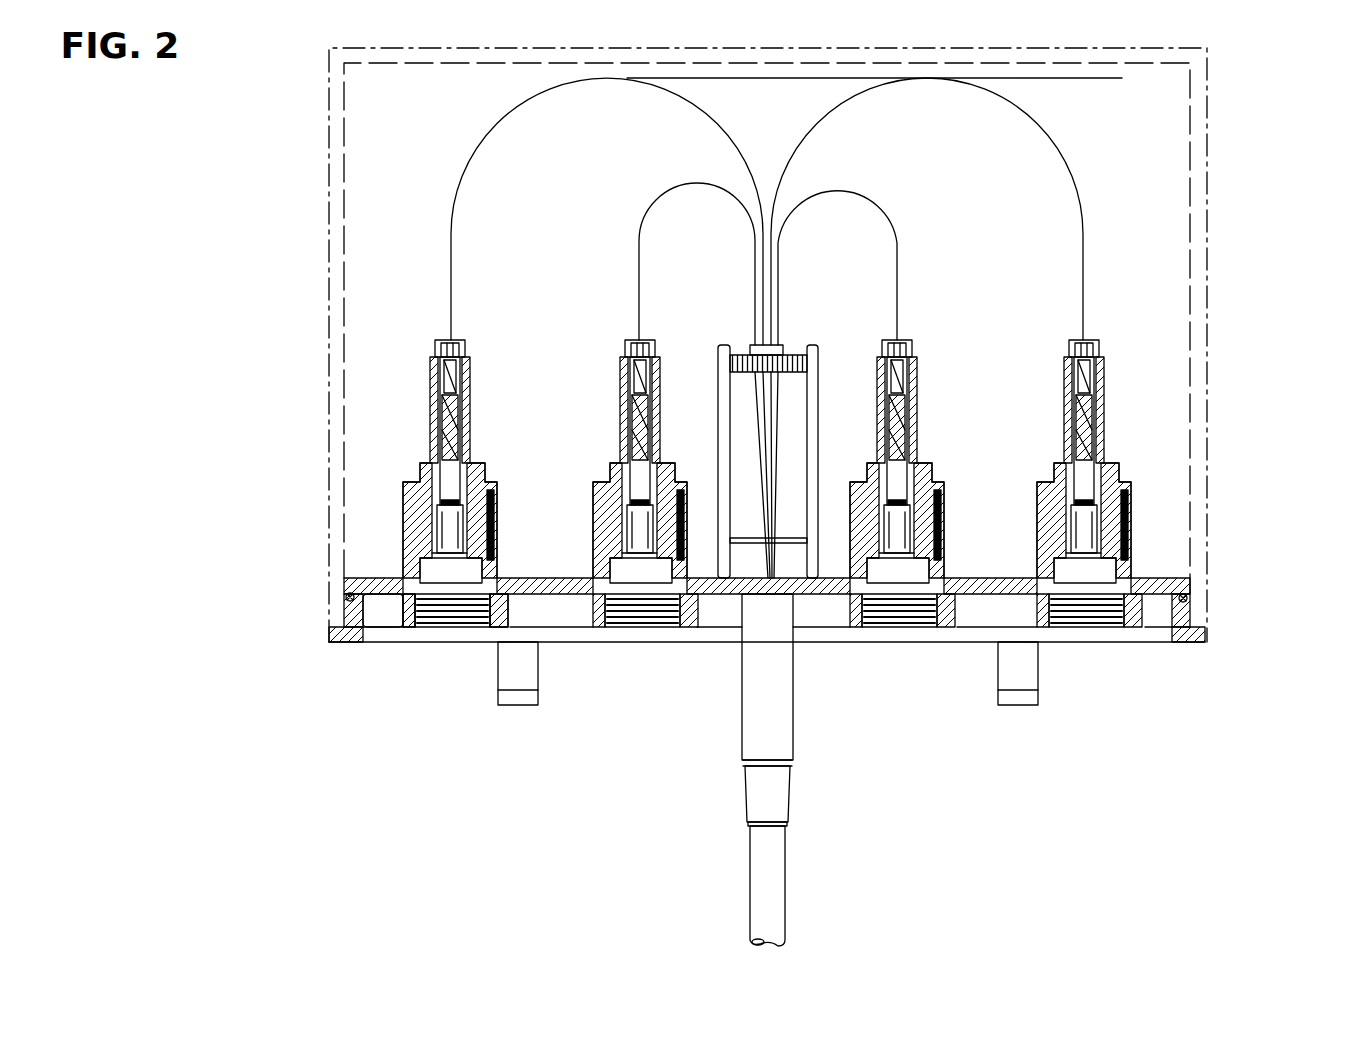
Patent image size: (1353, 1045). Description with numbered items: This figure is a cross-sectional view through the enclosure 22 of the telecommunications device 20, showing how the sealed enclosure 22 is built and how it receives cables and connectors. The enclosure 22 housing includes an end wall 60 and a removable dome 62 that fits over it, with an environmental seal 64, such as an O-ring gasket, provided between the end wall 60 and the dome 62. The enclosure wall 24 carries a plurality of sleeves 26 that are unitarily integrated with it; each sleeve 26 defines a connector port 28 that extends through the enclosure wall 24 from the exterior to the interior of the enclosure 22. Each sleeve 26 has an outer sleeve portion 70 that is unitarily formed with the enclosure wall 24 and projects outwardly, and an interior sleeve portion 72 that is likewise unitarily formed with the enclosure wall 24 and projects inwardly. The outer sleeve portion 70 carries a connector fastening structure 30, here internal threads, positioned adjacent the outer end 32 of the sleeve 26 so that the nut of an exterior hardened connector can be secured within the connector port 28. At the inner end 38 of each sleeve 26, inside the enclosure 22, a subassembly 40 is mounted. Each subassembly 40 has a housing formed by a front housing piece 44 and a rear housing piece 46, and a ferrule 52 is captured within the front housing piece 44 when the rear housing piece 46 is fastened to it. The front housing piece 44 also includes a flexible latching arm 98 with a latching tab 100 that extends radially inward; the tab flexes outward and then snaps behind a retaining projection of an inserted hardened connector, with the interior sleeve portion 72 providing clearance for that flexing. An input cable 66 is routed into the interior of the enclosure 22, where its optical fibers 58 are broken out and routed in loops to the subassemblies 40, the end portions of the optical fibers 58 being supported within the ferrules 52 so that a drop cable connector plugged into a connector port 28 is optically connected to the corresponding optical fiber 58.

The telecommunications device 20 is at (1264, 104).
The enclosure 22 is at (327, 378).
The enclosure wall 24 is at (765, 644).
The sleeve 26 is at (397, 614).
The connector port 28 is at (618, 624).
The connector fastening structure 30 is at (487, 633).
The outer end 32 is at (412, 628).
The inner end 38 is at (447, 459).
The subassembly 40 is at (680, 457).
The front housing piece 44 is at (467, 459).
The rear housing piece 46 is at (435, 350).
The ferrule 52 is at (927, 483).
The optical fiber 58 is at (458, 175).
The end wall 60 is at (1170, 643).
The dome 62 is at (1207, 221).
The environmental seal 64 is at (1188, 598).
The input cable 66 is at (786, 900).
The outer sleeve portion 70 is at (847, 607).
The interior sleeve portion 72 is at (847, 505).
The flexible latching arm 98 is at (1127, 508).
The latching tab 100 is at (918, 515).